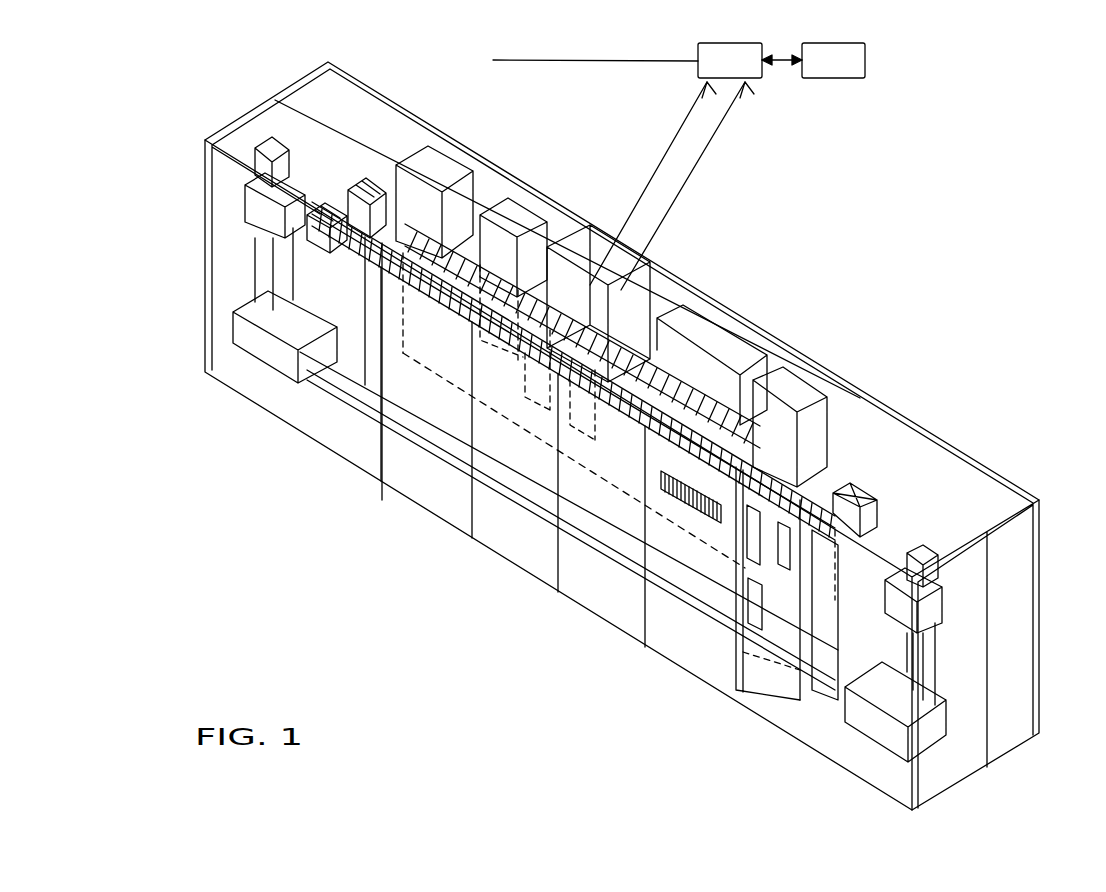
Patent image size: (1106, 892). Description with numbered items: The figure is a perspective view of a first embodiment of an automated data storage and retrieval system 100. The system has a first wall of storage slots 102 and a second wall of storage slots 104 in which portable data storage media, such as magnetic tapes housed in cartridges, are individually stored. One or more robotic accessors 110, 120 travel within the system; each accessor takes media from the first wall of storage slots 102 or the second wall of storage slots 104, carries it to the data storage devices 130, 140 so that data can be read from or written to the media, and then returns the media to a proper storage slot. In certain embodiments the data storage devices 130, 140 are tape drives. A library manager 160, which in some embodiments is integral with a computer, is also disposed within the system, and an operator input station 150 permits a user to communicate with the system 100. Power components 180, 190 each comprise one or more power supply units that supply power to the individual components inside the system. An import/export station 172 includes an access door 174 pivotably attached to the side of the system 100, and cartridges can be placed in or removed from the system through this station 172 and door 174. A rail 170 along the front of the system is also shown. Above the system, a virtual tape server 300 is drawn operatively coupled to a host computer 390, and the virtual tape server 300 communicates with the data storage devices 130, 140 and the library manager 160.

The automated data storage and retrieval system 100 is at (680, 722).
The first wall of storage slots 102 is at (468, 225).
The second wall of storage slots 104 is at (410, 397).
The accessor 110 is at (243, 207).
The accessor 120 is at (945, 610).
The data storage device 130 is at (590, 260).
The data storage device 140 is at (637, 278).
The operator input station 150 is at (540, 215).
The library manager 160 is at (493, 60).
The guide rail 170 is at (503, 487).
The import/export station 172 is at (795, 680).
The access door 174 is at (760, 668).
The power component 180 is at (855, 497).
The power component 190 is at (838, 575).
The virtual tape server 300 is at (627, 166).
The host computer 390 is at (813, 60).